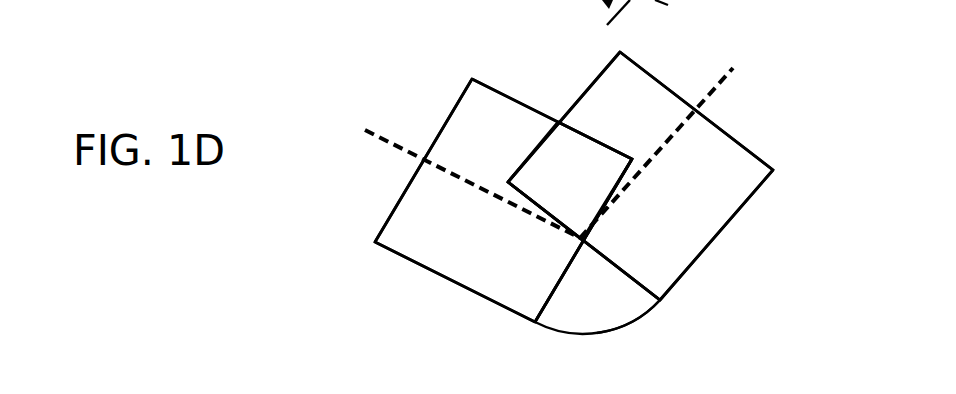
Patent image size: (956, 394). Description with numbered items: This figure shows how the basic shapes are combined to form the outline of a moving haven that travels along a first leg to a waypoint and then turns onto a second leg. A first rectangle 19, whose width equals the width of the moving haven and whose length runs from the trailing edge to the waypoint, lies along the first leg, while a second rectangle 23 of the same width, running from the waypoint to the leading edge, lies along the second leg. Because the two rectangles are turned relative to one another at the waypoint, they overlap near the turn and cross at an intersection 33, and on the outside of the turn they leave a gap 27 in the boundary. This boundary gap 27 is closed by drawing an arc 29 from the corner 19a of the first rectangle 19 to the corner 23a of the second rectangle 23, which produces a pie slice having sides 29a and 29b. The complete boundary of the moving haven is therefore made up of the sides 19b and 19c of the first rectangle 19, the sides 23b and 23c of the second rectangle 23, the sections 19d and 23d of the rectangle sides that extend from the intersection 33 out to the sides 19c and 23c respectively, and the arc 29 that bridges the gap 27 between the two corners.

The first rectangle 19 is at (402, 228).
The corner of the first rectangle 19a is at (533, 324).
The side of the first rectangle 19b is at (442, 275).
The side of the first rectangle 19c is at (415, 170).
The section of a side of the first rectangle 19d is at (485, 84).
The second rectangle 23 is at (732, 189).
The corner of the second rectangle 23a is at (660, 300).
The side of the second rectangle 23b is at (720, 232).
The side of the second rectangle 23c is at (745, 148).
The section of a side of the second rectangle 23d is at (599, 64).
The intersection 33 is at (557, 120).
The gap 27 is at (620, 303).
The arc 29 is at (595, 335).
The side of the pie slice 29a is at (563, 273).
The side of the pie slice 29b is at (618, 267).